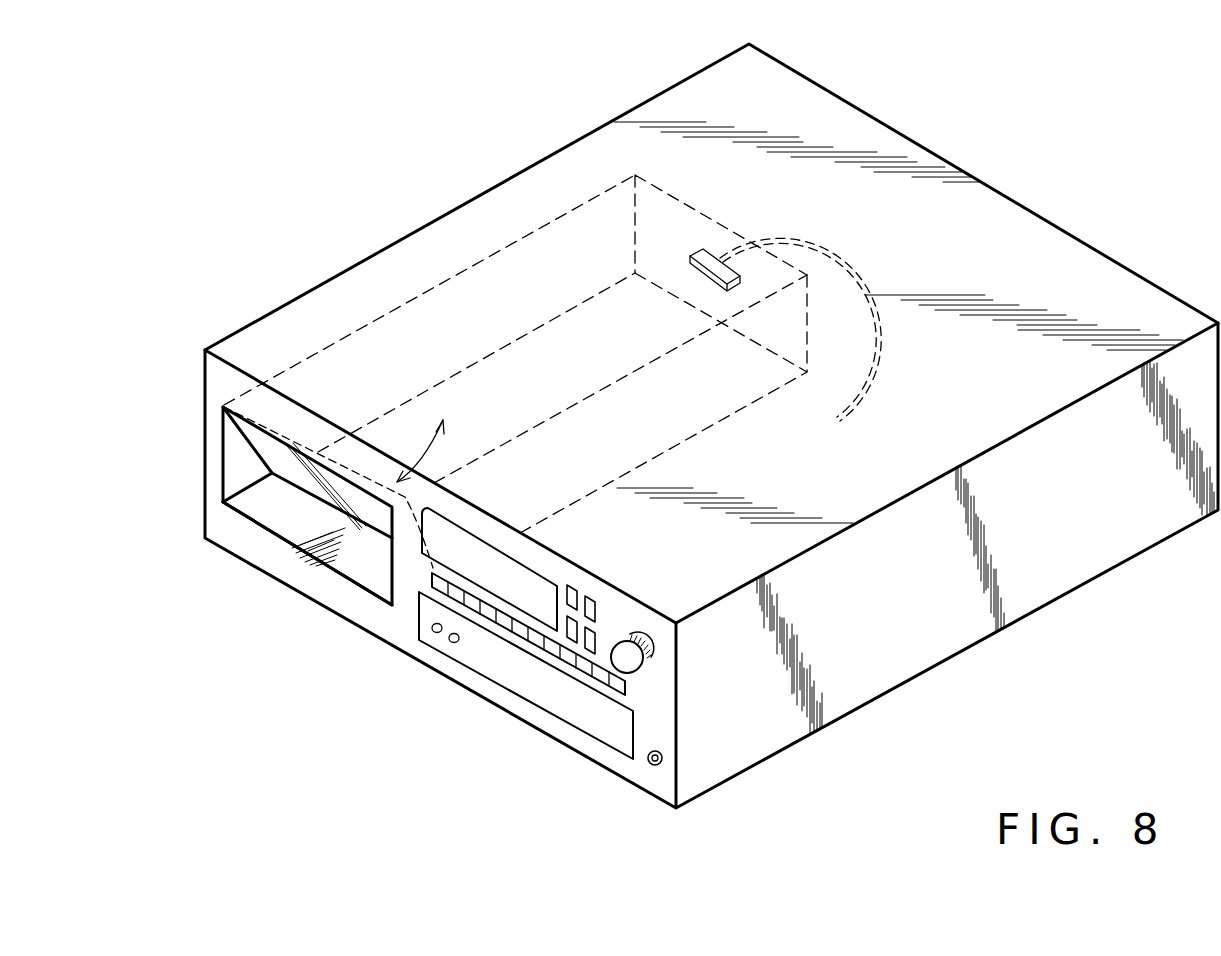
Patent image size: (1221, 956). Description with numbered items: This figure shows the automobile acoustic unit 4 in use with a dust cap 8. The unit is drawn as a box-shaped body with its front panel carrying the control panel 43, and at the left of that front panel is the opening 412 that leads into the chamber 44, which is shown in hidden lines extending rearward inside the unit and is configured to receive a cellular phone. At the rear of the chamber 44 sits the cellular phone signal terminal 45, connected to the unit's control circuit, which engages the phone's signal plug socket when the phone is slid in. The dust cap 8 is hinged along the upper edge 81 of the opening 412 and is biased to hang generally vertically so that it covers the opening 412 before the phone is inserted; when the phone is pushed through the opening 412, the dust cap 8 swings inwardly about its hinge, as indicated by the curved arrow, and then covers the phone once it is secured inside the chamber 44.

The automobile acoustic unit 4 is at (380, 222).
The dust cap 8 is at (282, 468).
The upper edge 81 is at (290, 442).
The opening 412 is at (332, 568).
The control panel 43 is at (622, 790).
The chamber 44 is at (372, 574).
The cellular phone signal terminal 45 is at (713, 250).